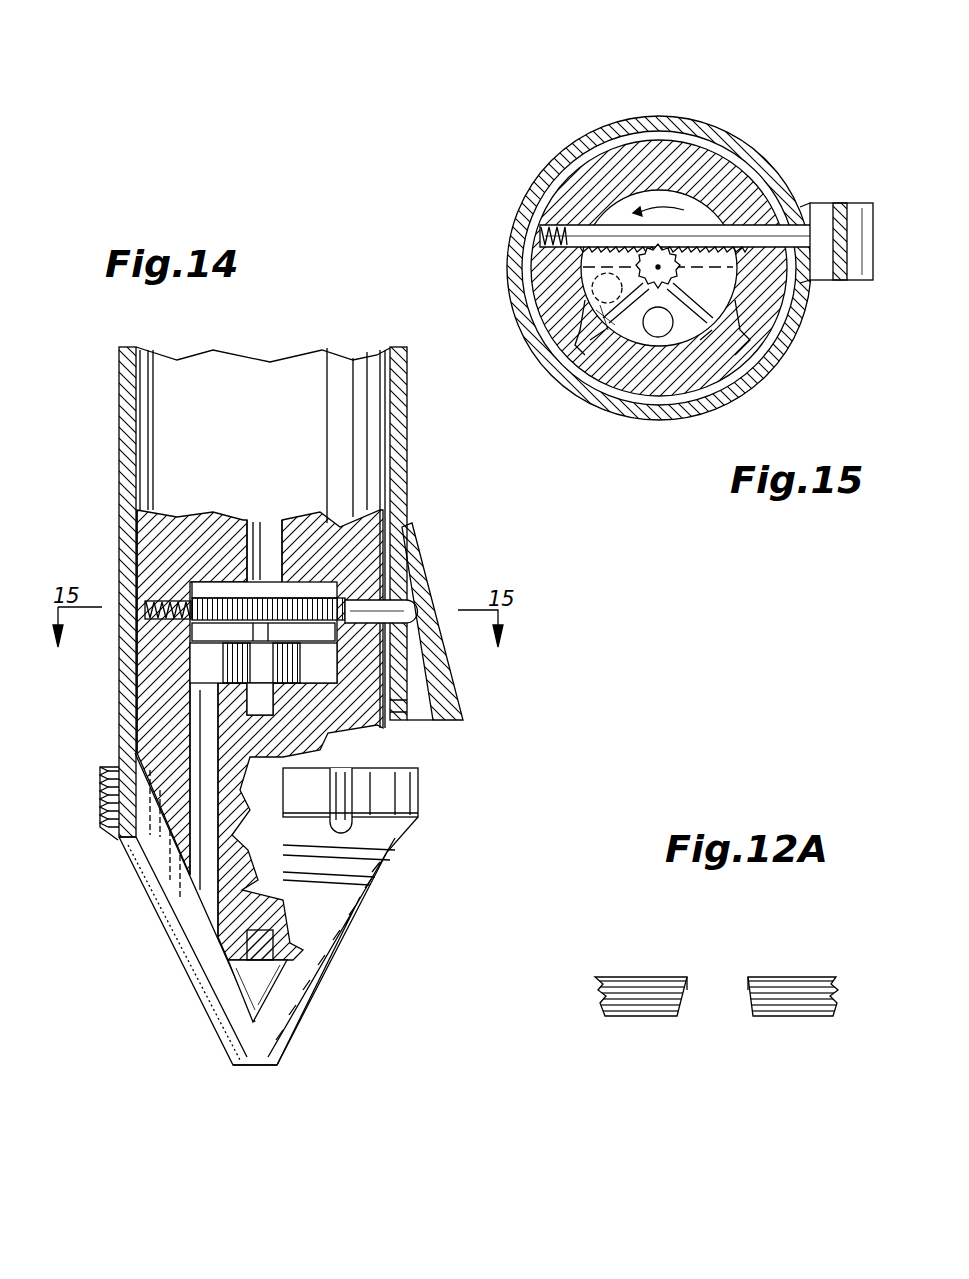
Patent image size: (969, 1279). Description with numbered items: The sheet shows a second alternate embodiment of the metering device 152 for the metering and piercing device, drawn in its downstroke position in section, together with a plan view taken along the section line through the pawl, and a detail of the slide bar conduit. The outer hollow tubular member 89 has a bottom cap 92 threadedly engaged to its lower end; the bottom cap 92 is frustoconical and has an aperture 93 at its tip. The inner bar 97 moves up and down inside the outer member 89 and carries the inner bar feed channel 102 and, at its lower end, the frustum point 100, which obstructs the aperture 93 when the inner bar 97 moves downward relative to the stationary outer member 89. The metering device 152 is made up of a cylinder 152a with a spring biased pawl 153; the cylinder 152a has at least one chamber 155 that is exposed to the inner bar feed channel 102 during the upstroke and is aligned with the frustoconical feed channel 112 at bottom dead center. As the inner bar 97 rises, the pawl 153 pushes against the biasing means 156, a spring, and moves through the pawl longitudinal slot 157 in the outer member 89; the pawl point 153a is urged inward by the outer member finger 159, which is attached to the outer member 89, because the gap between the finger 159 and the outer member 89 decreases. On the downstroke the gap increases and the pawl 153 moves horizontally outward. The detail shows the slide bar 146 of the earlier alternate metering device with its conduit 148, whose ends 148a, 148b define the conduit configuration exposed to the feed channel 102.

In FIG. 14, the outer hollow tubular member 89 is at (120, 428).
In FIG. 15, the outer hollow tubular member 89 is at (745, 390).
In FIG. 14, the bottom cap 92 is at (165, 895).
In FIG. 14, the aperture 93 is at (240, 1080).
In FIG. 14, the inner bar 97 is at (165, 548).
In FIG. 15, the inner bar 97 is at (765, 345).
In FIG. 14, the frustum point 100 is at (248, 982).
In FIG. 14, the inner bar feed channel 102 is at (274, 520).
In FIG. 14, the frustoconical feed channel 112 is at (195, 750).
In FIG. 15, the frustoconical feed channel 112 is at (583, 293).
In FIG. 12A, the slide bar 146 is at (630, 1018).
In FIG. 12A, the conduit 148 is at (720, 1003).
In FIG. 12A, the conduit end portion 148a is at (687, 975).
In FIG. 12A, the conduit end portion 148b is at (750, 975).
In FIG. 15, the metering device 152 is at (646, 96).
In FIG. 14, the cylinder 152a is at (187, 680).
In FIG. 15, the cylinder 152a is at (665, 175).
In FIG. 14, the spring biased pawl 153 is at (383, 570).
In FIG. 15, the spring biased pawl 153 is at (757, 222).
In FIG. 14, the pawl point 153a is at (413, 606).
In FIG. 15, the pawl point 153a is at (830, 205).
In FIG. 14, the chamber 155 is at (290, 667).
In FIG. 15, the chamber 155 is at (627, 343).
In FIG. 14, the biasing means 156 is at (150, 614).
In FIG. 15, the biasing means 156 is at (545, 220).
In FIG. 14, the pawl longitudinal slot 157 is at (407, 712).
In FIG. 14, the outer member finger 159 is at (465, 707).
In FIG. 15, the outer member finger 159 is at (830, 285).